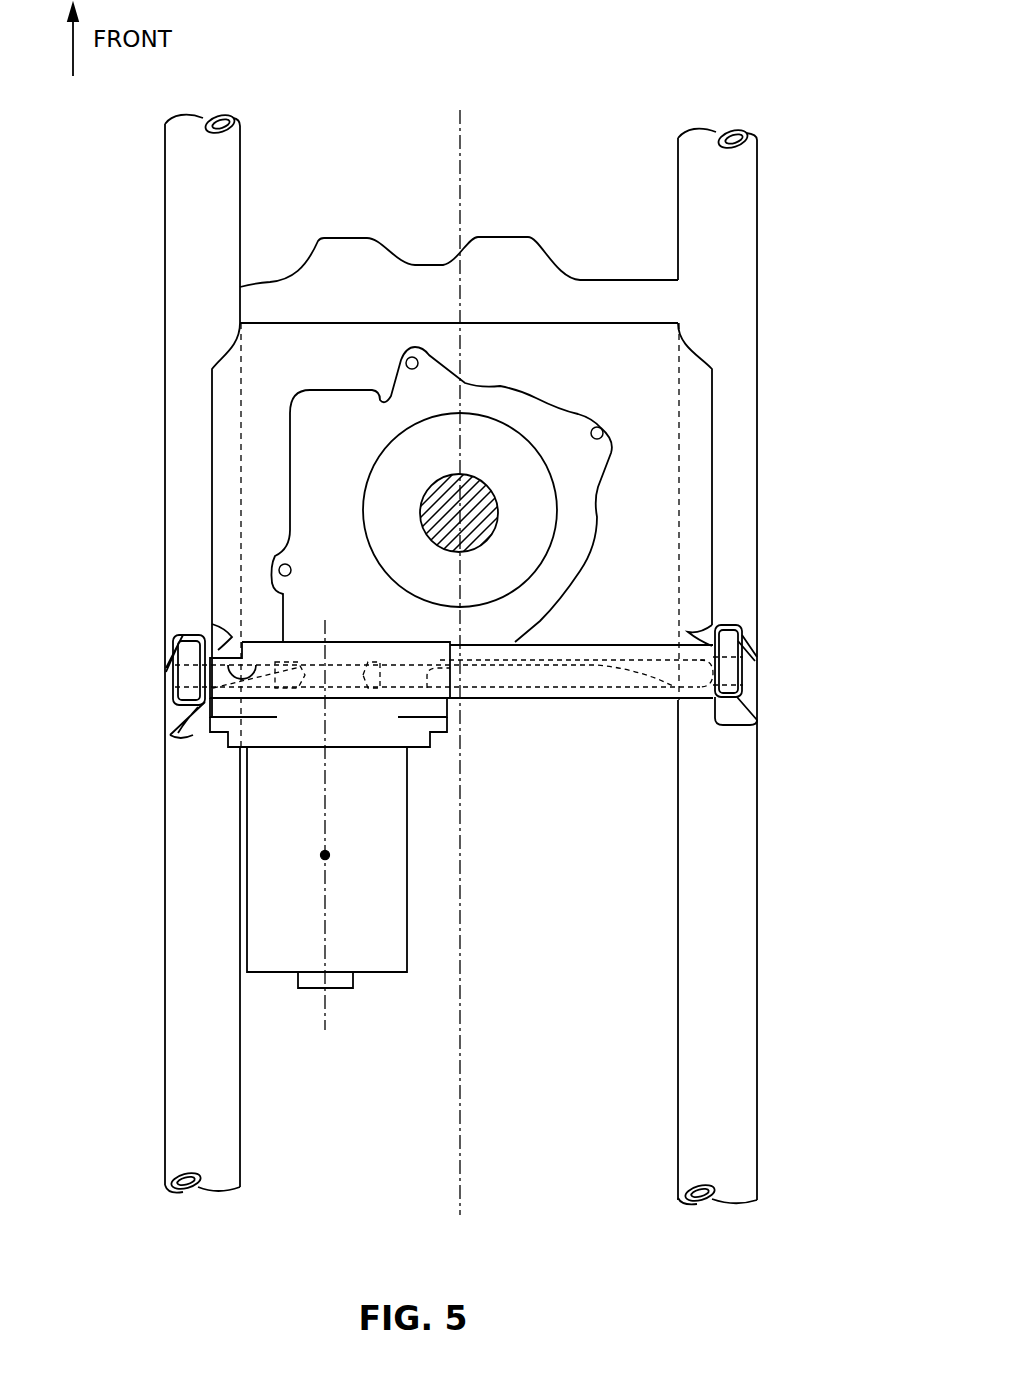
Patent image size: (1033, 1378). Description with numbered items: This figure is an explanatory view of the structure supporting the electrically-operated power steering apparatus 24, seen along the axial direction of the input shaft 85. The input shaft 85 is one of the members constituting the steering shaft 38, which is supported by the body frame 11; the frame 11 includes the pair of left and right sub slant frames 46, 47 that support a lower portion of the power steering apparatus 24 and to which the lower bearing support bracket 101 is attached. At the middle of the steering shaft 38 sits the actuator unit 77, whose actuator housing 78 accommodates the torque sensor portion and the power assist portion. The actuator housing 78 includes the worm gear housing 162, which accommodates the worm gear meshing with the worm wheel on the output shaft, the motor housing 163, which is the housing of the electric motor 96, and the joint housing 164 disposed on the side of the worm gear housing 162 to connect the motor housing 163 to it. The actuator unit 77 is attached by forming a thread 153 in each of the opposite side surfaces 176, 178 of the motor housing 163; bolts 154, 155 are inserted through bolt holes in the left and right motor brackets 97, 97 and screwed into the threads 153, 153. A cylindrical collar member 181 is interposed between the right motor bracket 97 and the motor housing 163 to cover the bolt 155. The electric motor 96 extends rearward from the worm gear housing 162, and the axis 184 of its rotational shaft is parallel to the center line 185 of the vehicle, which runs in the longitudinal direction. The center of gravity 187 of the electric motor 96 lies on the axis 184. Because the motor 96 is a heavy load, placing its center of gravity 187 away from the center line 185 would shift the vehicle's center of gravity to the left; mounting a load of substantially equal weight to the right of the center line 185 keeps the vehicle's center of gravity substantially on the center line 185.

The body frame 11 is at (766, 236).
The electrically-operated power steering apparatus 24 is at (357, 376).
The steering shaft 38 is at (497, 480).
The left sub slant frame 46 is at (177, 1110).
The right sub slant frame 47 is at (720, 1128).
The actuator unit 77 is at (284, 515).
The actuator housing 78 is at (527, 407).
The input shaft 85 is at (500, 505).
The electric motor 96 is at (378, 947).
The motor bracket 97 is at (187, 633).
The lower bearing support bracket 101 is at (648, 414).
The internal thread 153 is at (232, 650).
The bolt 154 is at (187, 685).
The bolt 155 is at (738, 677).
The worm gear housing 162 is at (310, 445).
The motor housing 163 is at (270, 843).
The joint housing 164 is at (297, 648).
The side surface 176 is at (203, 712).
The side surface 178 is at (458, 705).
The cylindrical collar member 181 is at (640, 690).
The axis 184 is at (323, 1030).
The center line 185 is at (460, 1205).
The center of gravity 187 is at (325, 855).